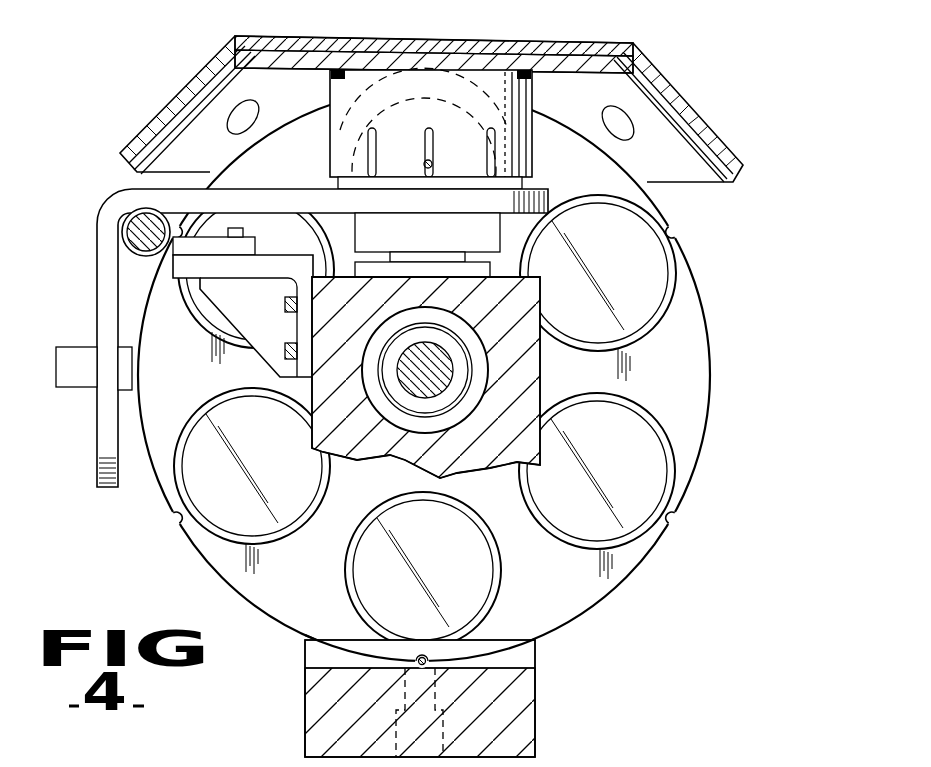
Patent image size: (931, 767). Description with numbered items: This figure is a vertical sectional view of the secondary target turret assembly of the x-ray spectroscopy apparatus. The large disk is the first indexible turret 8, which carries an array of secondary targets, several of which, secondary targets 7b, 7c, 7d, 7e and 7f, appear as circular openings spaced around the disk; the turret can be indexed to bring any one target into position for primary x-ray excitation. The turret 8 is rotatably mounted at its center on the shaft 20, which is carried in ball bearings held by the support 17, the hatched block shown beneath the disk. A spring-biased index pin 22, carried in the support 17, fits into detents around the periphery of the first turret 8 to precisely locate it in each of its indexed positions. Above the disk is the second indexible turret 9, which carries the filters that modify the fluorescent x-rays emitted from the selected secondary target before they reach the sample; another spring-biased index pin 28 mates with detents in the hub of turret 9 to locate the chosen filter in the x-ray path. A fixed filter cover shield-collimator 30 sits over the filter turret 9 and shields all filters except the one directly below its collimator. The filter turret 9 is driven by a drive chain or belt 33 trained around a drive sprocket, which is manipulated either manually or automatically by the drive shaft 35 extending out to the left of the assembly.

The first indexible turret 8 is at (702, 365).
The second indexible turret 9 is at (702, 187).
The fixed filter cover shield-collimator 30 is at (587, 43).
The spring-biased index pin 28 is at (431, 161).
The drive chain or belt 33 is at (98, 230).
The drive shaft 35 is at (62, 373).
The shaft 20 is at (426, 377).
The spring-biased index pin 22 is at (433, 657).
The support 17 is at (528, 723).
The secondary target 7b is at (631, 263).
The secondary target 7c is at (633, 475).
The secondary target 7d is at (453, 565).
The secondary target 7e is at (195, 473).
The secondary target 7f is at (212, 312).